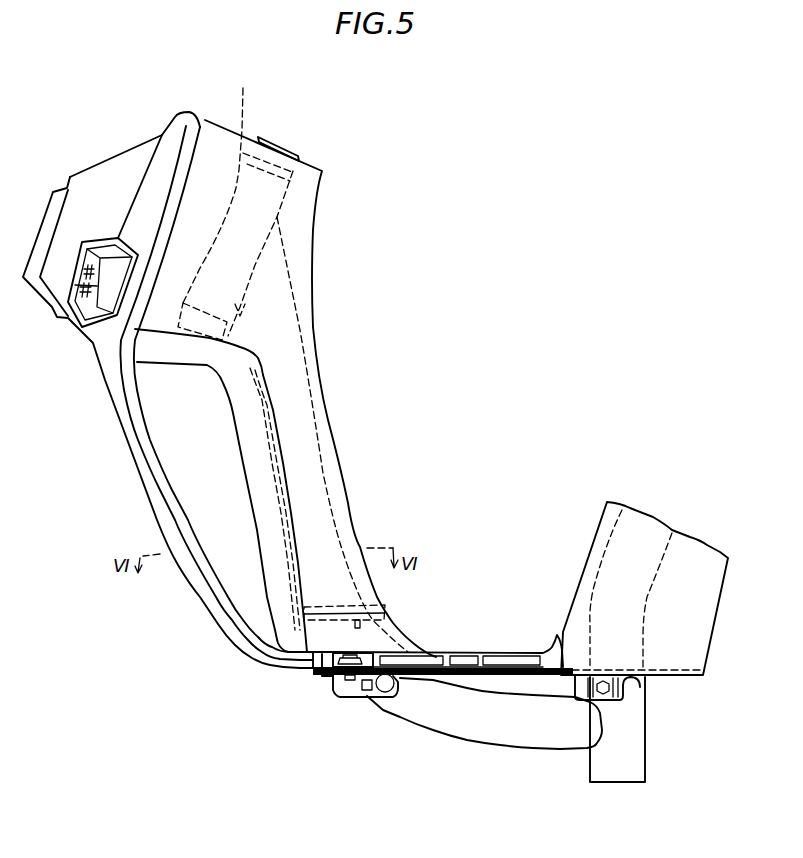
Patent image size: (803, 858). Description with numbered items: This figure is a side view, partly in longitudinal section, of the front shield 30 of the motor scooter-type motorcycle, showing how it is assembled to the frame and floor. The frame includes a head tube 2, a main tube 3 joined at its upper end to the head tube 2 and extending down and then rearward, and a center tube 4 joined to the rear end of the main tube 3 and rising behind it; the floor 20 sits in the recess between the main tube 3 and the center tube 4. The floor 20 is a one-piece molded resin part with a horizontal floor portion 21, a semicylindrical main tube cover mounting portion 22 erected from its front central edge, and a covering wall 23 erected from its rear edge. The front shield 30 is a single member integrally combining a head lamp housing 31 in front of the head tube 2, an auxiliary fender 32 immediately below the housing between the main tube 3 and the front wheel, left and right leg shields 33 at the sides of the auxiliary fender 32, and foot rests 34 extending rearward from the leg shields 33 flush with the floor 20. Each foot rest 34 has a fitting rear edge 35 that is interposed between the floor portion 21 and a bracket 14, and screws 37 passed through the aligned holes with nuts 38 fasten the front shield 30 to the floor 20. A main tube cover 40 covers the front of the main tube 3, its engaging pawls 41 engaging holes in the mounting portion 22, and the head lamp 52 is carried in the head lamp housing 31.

The head tube 2 is at (235, 201).
The main tube 3 is at (320, 493).
The center tube 4 is at (635, 733).
The bracket 14 is at (467, 680).
The floor 20 is at (552, 615).
The horizontal floor portion 21 is at (497, 647).
The main tube cover mounting portion 22 is at (400, 648).
The covering wall 23 is at (586, 566).
The front shield 30 is at (85, 352).
The head lamp housing 31 is at (123, 162).
The auxiliary fender 32 is at (163, 418).
The leg shield 33 is at (150, 487).
The foot rest 34 is at (265, 655).
The fitting rear edge 35 is at (328, 673).
The screw 37 is at (360, 652).
The nut 38 is at (350, 692).
The main tube cover 40 is at (324, 268).
The engaging pawl 41 is at (375, 606).
The head lamp 52 is at (52, 213).